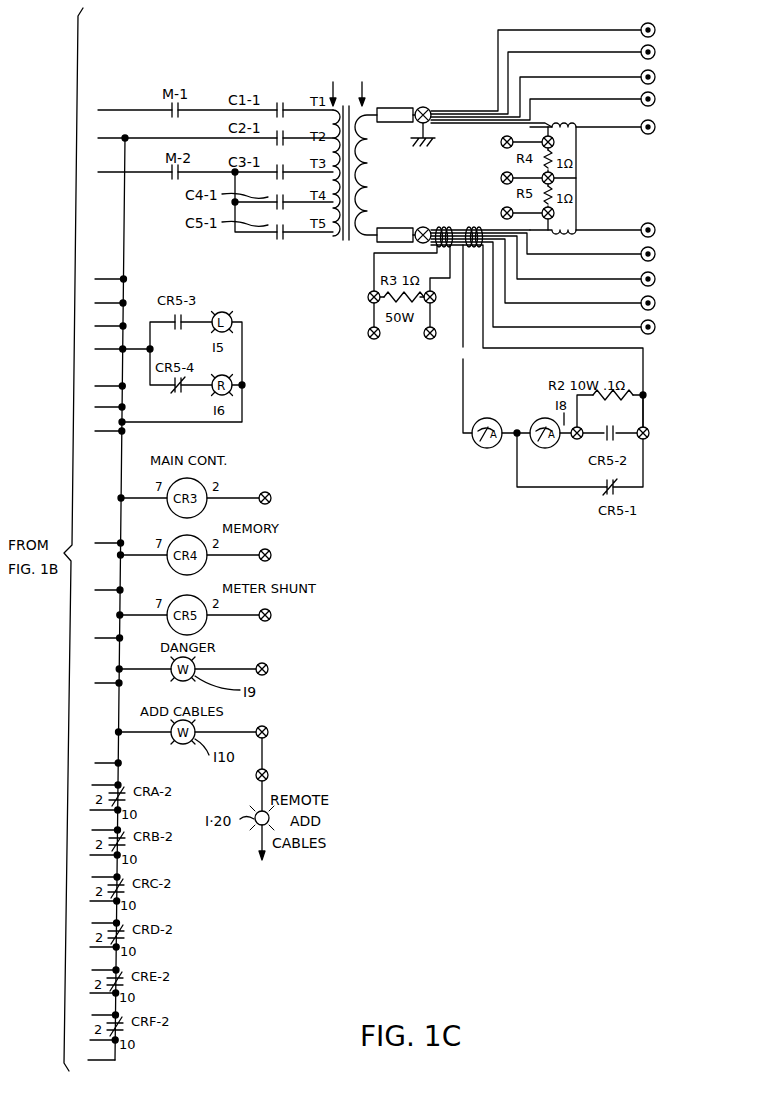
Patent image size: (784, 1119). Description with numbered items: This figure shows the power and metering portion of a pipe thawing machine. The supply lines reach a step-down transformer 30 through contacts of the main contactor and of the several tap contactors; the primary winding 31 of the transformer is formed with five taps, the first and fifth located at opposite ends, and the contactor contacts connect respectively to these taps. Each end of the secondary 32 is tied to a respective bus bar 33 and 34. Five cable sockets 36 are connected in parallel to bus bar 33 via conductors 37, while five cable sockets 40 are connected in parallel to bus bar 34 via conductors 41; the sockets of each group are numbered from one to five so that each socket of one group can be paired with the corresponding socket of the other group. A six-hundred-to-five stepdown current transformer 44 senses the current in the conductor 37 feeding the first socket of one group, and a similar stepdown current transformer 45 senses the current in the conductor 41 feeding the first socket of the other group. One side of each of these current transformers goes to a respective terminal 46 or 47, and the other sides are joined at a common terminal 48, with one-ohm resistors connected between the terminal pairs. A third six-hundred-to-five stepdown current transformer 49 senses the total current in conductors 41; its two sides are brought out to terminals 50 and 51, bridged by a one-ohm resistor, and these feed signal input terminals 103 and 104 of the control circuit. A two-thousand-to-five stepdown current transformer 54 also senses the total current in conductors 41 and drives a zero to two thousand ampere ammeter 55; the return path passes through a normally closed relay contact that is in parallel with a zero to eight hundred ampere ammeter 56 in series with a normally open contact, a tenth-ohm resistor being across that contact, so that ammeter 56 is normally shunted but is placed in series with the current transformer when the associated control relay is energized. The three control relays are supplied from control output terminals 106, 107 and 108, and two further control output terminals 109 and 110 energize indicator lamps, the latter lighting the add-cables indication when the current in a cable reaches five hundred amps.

The step-down transformer 30 is at (334, 33).
The primary winding 31 is at (297, 246).
The secondary 32 is at (356, 240).
The bus bar 33 is at (400, 107).
The bus bar 34 is at (400, 227).
The cable sockets 36 is at (653, 134).
The conductors 37 is at (498, 28).
The cable sockets 40 is at (657, 211).
The conductors 41 is at (586, 303).
The stepdown current transformer 44 is at (574, 132).
The stepdown current transformer 45 is at (562, 222).
The terminal 46 is at (500, 143).
The terminal 47 is at (502, 208).
The terminal 48 is at (501, 175).
The stepdown current transformer 49 is at (451, 219).
The terminal 50 is at (367, 297).
The terminal 51 is at (436, 295).
The stepdown current transformer 54 is at (468, 216).
The ammeter 55 is at (481, 449).
The ammeter 56 is at (543, 418).
The signal input terminal 103 is at (368, 333).
The signal input terminal 104 is at (432, 340).
The control output terminal 106 is at (272, 499).
The control output terminal 107 is at (272, 556).
The control output terminal 108 is at (272, 616).
The control output terminal 109 is at (269, 670).
The control output terminal 110 is at (269, 733).